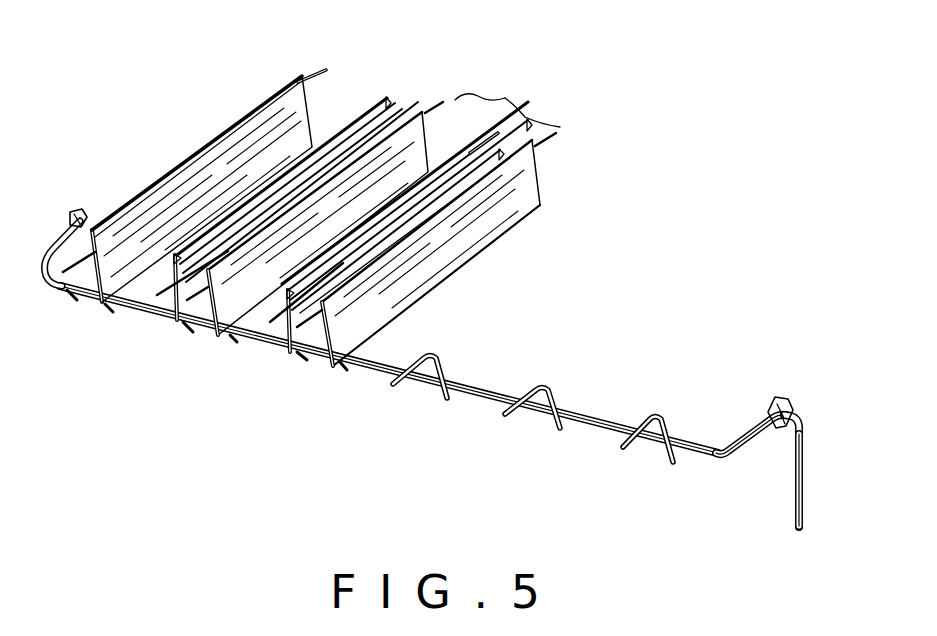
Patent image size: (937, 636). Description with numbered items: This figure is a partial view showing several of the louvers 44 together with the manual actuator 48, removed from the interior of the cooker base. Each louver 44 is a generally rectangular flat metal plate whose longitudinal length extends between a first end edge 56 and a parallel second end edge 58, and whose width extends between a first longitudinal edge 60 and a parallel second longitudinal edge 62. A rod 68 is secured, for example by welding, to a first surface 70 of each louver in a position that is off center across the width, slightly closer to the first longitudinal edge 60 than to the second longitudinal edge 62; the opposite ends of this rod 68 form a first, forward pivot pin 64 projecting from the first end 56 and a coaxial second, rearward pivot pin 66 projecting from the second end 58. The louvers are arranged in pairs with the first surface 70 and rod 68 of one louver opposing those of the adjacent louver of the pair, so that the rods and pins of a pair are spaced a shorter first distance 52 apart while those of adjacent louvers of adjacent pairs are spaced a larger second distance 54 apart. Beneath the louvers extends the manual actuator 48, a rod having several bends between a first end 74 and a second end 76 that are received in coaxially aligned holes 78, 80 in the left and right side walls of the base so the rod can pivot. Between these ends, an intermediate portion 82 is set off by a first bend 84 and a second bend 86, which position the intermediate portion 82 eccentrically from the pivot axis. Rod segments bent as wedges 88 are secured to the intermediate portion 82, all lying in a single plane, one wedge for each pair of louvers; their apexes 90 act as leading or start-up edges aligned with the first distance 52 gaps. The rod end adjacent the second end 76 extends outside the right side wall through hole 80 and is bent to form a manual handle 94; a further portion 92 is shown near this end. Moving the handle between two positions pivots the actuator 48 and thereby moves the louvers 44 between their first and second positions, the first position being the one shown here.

The louvers 44 is at (298, 120).
The manual actuator 48 is at (483, 401).
The first distance 52 is at (560, 122).
The second distance 54 is at (500, 100).
The first end edge 56 is at (87, 254).
The second end edge 58 is at (325, 70).
The first longitudinal edge 60 is at (232, 127).
The second longitudinal edge 62 is at (147, 277).
The first pivot pin 64 is at (177, 320).
The second pivot pin 66 is at (416, 96).
The rod 68 is at (287, 193).
The first surface 70 is at (208, 222).
The first end 74 is at (70, 218).
The second end 76 is at (780, 396).
The hole 78 is at (86, 216).
The hole 80 is at (791, 411).
The intermediate portion 82 is at (502, 397).
The first bend 84 is at (45, 277).
The second bend 86 is at (722, 453).
The wedges 88 is at (420, 353).
The apexes 90 is at (437, 357).
The wire corner 92 is at (803, 425).
The manual handle 94 is at (800, 493).